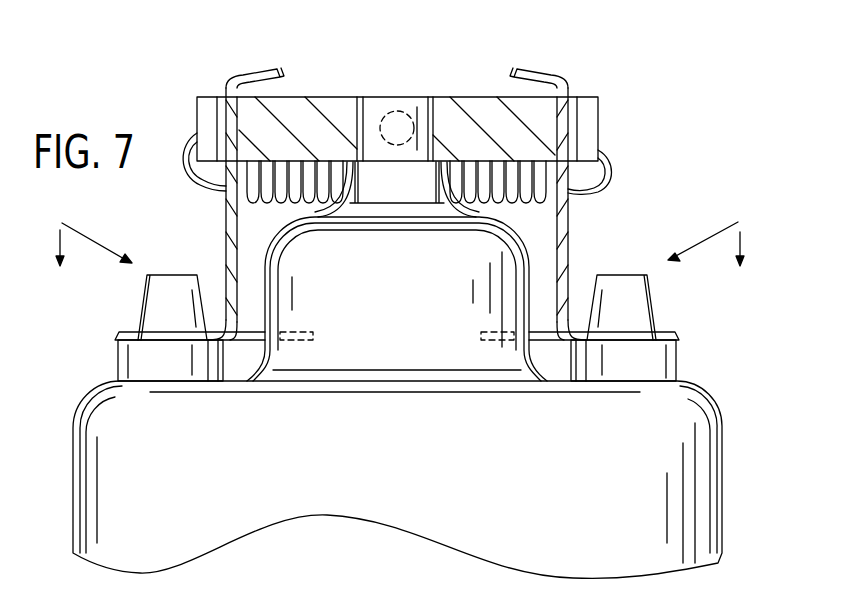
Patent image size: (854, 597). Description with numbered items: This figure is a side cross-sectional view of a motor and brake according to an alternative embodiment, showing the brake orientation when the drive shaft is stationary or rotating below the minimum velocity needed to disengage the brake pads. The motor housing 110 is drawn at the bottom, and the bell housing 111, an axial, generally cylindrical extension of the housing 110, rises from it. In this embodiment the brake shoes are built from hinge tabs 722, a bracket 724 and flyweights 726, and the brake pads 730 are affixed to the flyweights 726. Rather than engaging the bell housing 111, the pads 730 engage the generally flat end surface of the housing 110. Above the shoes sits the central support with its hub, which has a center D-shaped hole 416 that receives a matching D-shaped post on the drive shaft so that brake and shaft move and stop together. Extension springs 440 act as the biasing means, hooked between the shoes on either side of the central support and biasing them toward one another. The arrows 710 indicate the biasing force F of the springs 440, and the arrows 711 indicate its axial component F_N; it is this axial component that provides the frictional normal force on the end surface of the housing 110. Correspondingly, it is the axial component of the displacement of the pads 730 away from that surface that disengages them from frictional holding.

The motor housing 110 is at (526, 478).
The bell housing 111 is at (360, 307).
The D-shaped hole 416 is at (381, 121).
The extension springs 440 is at (186, 146).
The arrows indicating biasing force F 710 is at (66, 222).
The arrows indicating axial force component F_N 711 is at (58, 265).
The hinge tabs 722 is at (288, 74).
The bracket 724 is at (226, 222).
The flyweights 726 is at (117, 333).
The brake pads 730 is at (143, 293).